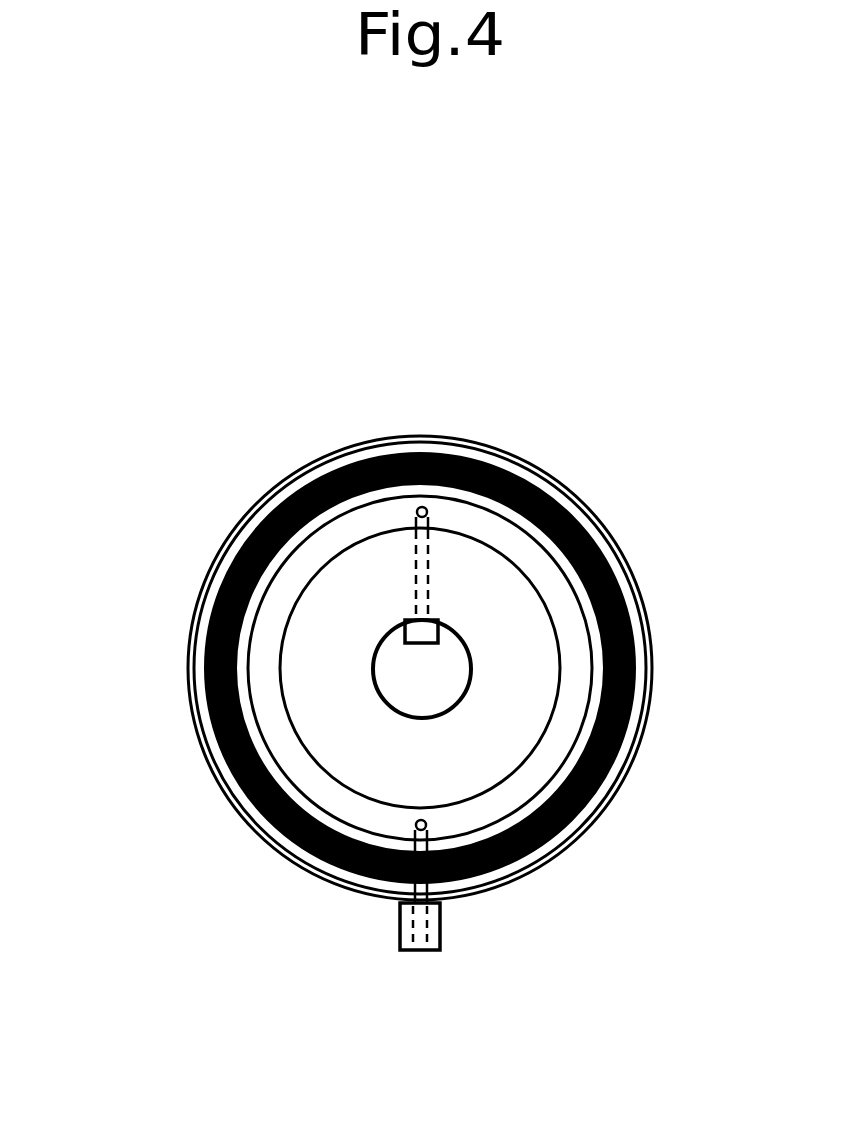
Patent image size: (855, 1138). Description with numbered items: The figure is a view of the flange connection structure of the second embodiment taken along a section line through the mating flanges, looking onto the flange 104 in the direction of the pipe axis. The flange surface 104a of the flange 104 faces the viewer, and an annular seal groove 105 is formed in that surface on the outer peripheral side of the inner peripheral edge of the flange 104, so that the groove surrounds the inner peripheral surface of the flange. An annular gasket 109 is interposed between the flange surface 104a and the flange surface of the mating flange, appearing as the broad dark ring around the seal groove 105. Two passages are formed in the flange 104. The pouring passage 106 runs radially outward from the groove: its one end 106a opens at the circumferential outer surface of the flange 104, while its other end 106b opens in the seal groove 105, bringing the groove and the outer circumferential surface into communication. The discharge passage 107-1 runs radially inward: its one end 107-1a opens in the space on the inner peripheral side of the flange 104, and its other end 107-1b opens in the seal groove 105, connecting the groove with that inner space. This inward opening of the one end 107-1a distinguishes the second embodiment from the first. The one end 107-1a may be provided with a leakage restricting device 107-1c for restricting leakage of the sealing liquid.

The flange 104 is at (599, 512).
The flange surface 104a is at (620, 570).
The annular seal groove 105 is at (573, 625).
The pouring passage 106 is at (300, 960).
The one end of the pouring passage 106a is at (418, 952).
The other end of the pouring passage 106b is at (415, 823).
The discharge passage 107-1 is at (375, 558).
The one end of the discharge passage 107-1a is at (404, 633).
The other end of the discharge passage 107-1b is at (417, 510).
The leakage restricting device 107-1c is at (432, 628).
The annular gasket 109 is at (625, 743).